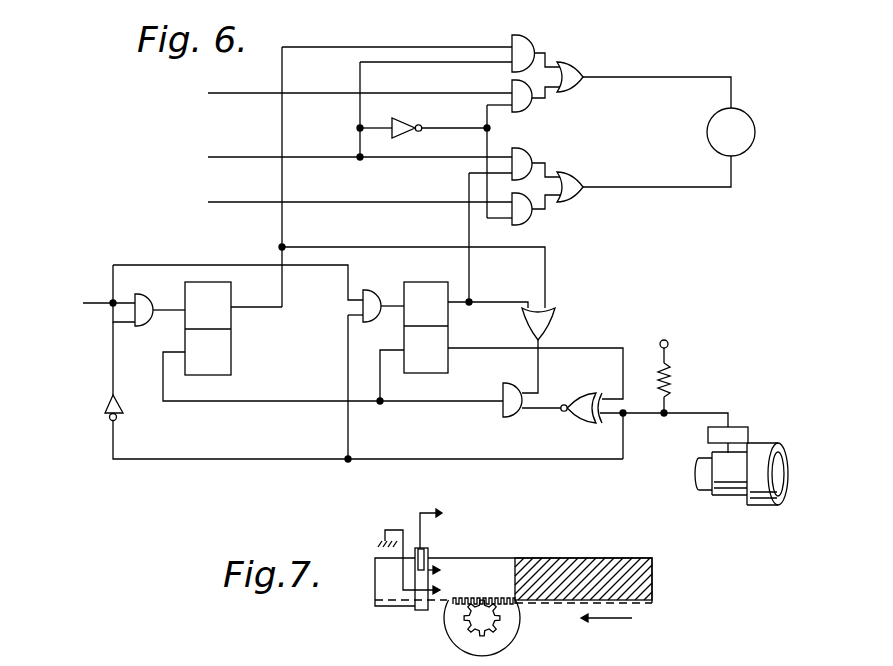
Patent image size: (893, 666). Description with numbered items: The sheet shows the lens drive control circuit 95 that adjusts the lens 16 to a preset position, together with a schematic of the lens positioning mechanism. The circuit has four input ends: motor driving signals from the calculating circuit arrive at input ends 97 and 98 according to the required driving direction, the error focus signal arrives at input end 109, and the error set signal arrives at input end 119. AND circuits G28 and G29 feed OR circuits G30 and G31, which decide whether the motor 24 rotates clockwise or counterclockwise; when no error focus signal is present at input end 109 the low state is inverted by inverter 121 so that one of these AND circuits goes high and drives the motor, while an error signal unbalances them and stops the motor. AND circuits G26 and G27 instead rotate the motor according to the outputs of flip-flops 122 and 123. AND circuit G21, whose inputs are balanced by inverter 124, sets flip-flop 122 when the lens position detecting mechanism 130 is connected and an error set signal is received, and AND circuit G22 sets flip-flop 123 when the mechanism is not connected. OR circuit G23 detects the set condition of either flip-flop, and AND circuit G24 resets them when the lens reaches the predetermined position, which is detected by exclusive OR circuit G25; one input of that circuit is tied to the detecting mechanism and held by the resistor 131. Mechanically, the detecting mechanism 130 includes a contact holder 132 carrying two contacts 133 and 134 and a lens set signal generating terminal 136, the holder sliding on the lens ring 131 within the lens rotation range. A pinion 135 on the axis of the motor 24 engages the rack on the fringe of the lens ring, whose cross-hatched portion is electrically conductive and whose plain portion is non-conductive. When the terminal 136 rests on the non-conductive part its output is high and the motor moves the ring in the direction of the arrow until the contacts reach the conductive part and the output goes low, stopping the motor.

In FIG. 6, the lens drive control circuit 95 is at (322, 44).
In FIG. 6, the input end 97 is at (345, 93).
In FIG. 6, the input end 109 is at (338, 158).
In FIG. 6, the input end 98 is at (346, 203).
In FIG. 6, the inverter 121 is at (400, 118).
In FIG. 6, the motor 24 is at (707, 128).
In FIG. 7, the motor 24 is at (518, 632).
In FIG. 6, the input end 119 is at (91, 303).
In FIG. 6, the flip-flop 122 is at (231, 352).
In FIG. 6, the flip-flop 123 is at (448, 342).
In FIG. 6, the inverter 124 is at (108, 414).
In FIG. 6, the resistor / lens ring 131 is at (672, 372).
In FIG. 7, the resistor / lens ring 131 is at (618, 558).
In FIG. 6, the lens position detecting mechanism 130 is at (740, 427).
In FIG. 7, the lens position detecting mechanism 130 is at (374, 553).
In FIG. 6, the lens 16 is at (766, 444).
In FIG. 7, the contact holder 132 is at (428, 553).
In FIG. 7, the contact 133 is at (440, 570).
In FIG. 7, the contact 134 is at (432, 607).
In FIG. 7, the pinion 135 is at (465, 630).
In FIG. 7, the lens set signal generating terminal 136 is at (431, 512).
In FIG. 6, the AND circuit G21 is at (152, 321).
In FIG. 6, the AND circuit G22 is at (378, 298).
In FIG. 6, the OR circuit G23 is at (558, 315).
In FIG. 6, the AND circuit G24 is at (514, 418).
In FIG. 6, the exclusive OR circuit G25 is at (583, 421).
In FIG. 6, the AND circuit G26 is at (530, 40).
In FIG. 6, the AND circuit G27 is at (575, 172).
In FIG. 6, the AND circuit G28 is at (527, 104).
In FIG. 6, the AND circuit G29 is at (529, 219).
In FIG. 6, the OR circuit G30 is at (586, 84).
In FIG. 6, the OR circuit G31 is at (584, 192).